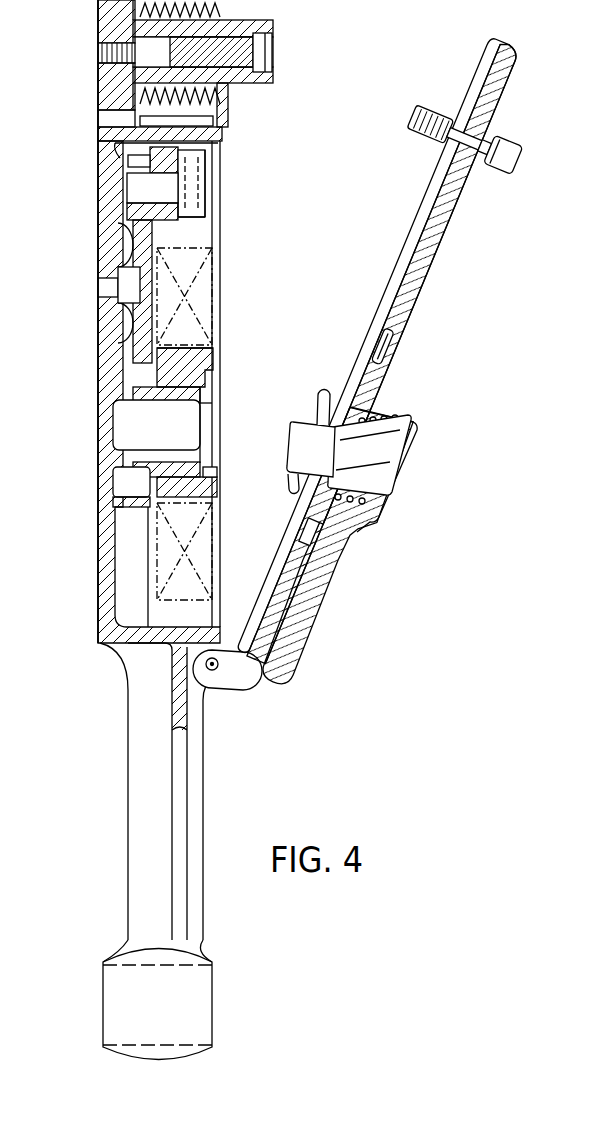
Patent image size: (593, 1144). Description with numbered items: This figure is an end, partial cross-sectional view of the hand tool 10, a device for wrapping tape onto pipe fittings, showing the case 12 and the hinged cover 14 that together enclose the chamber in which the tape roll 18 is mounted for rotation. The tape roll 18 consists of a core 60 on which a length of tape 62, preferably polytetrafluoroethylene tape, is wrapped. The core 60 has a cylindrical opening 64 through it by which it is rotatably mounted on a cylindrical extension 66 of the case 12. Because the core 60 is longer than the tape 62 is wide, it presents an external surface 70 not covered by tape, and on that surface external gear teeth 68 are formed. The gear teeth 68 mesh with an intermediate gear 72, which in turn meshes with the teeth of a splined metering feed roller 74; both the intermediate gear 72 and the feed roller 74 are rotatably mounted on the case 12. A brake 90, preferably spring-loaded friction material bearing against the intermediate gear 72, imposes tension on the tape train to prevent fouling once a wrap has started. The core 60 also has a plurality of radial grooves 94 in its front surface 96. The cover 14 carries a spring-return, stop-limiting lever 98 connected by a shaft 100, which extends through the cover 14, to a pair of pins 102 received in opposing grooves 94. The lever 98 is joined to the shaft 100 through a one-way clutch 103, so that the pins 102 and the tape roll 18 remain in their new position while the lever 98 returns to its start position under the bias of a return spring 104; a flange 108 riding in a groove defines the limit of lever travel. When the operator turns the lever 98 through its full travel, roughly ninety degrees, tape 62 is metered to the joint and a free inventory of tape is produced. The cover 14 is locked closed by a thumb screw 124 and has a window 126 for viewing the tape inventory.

The hand tool 10 is at (372, 644).
The case 12 is at (110, 335).
The hinged cover 14 is at (406, 469).
The tape roll 18 is at (220, 305).
The core 60 is at (213, 370).
The tape 62 is at (212, 285).
The cylindrical opening 64 is at (200, 410).
The cylindrical extension 66 is at (185, 450).
The external gear teeth 68 is at (115, 395).
The external surface 70 is at (120, 490).
The intermediate gear 72 is at (125, 230).
The metering feed roller 74 is at (207, 158).
The brake 90 is at (128, 262).
The radial grooves 94 is at (212, 477).
The front surface 96 is at (215, 358).
The stop-limiting lever 98 is at (330, 546).
The shaft 100 is at (365, 460).
The pins 102 is at (323, 400).
The one-way clutch 103 is at (412, 451).
The return spring 104 is at (380, 522).
The flange 108 is at (309, 532).
The thumb screw 124 is at (464, 138).
The window 126 is at (382, 346).